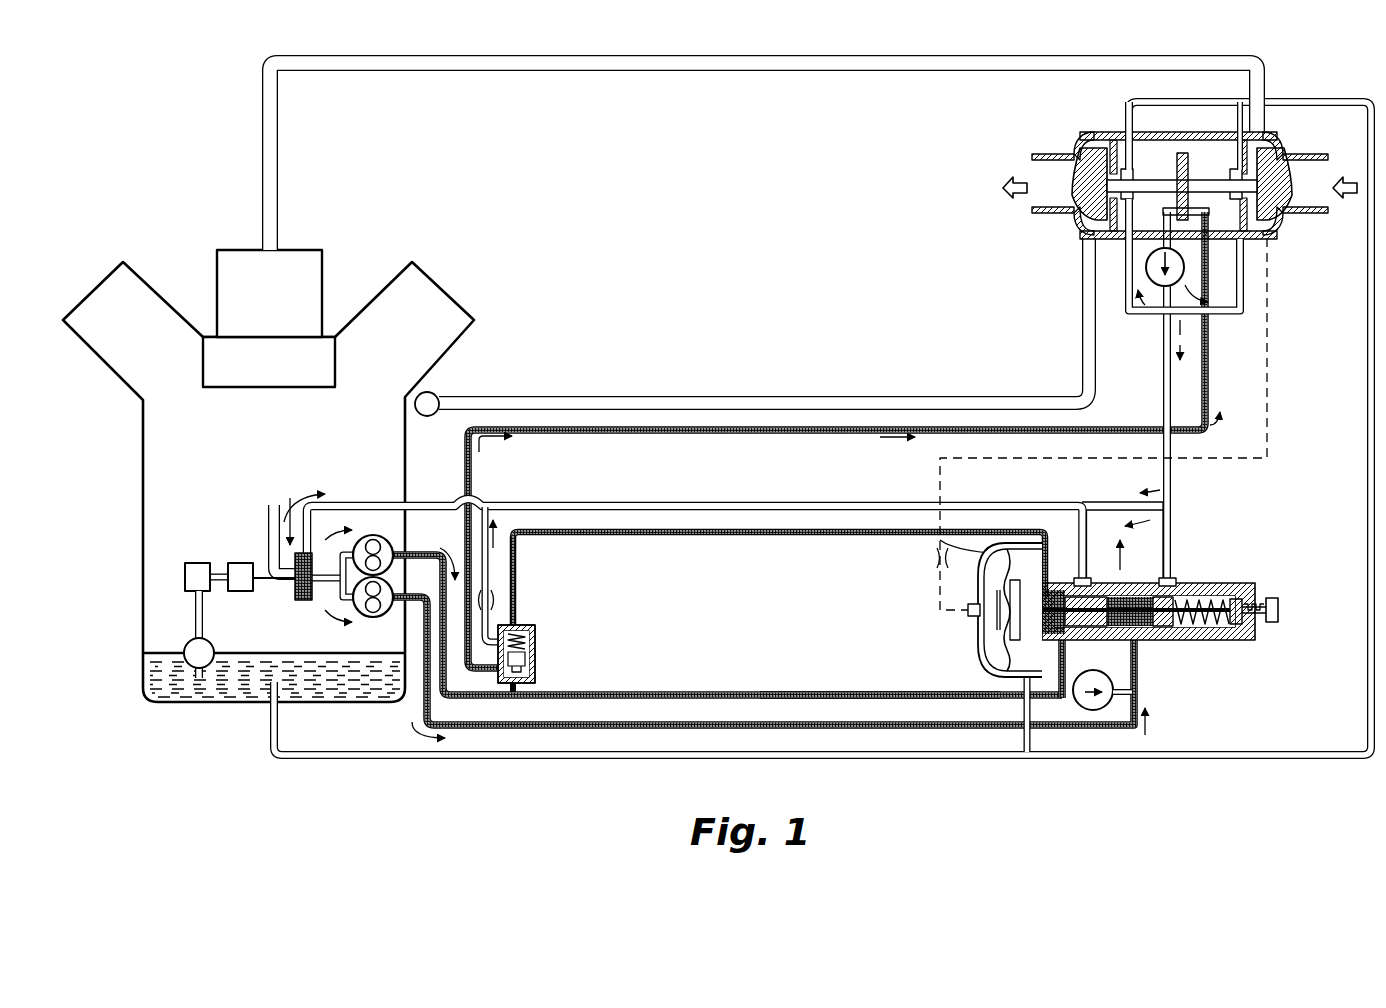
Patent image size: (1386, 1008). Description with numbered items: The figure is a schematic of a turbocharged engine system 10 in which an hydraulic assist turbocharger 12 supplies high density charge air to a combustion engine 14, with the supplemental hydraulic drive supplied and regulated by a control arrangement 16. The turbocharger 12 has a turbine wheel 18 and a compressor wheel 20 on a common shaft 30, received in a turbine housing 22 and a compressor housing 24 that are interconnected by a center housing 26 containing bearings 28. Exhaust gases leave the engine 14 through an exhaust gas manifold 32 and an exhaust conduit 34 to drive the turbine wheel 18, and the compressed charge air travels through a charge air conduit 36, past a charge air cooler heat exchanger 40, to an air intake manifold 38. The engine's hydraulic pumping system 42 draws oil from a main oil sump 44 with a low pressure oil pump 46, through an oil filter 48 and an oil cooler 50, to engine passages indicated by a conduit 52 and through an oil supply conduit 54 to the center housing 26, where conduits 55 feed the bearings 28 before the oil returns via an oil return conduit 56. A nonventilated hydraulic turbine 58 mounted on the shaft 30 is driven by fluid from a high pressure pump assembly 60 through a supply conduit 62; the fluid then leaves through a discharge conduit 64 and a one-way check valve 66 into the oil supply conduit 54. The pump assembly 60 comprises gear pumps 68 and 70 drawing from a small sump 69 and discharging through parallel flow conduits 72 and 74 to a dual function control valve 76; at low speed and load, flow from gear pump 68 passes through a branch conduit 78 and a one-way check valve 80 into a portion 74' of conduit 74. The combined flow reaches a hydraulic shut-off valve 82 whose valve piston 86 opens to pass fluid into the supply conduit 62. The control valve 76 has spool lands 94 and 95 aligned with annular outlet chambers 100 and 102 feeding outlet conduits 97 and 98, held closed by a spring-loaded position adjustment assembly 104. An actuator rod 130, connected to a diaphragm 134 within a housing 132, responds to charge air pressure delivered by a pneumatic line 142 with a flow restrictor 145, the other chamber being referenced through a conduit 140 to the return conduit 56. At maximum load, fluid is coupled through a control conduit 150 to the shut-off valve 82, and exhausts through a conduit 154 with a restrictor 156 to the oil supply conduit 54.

The turbocharged engine system 10 is at (132, 158).
The hydraulic assist turbocharger 12 is at (1010, 157).
The combustion engine 14 is at (143, 460).
The control arrangement 16 is at (985, 782).
The turbine wheel 18 is at (1078, 213).
The compressor wheel 20 is at (1285, 215).
The turbine housing 22 is at (1052, 157).
The compressor housing 24 is at (1290, 157).
The center housing 26 is at (1130, 118).
The bearings 28 is at (1135, 172).
The shaft 30 is at (1195, 180).
The exhaust gas manifold 32 is at (435, 398).
The exhaust conduit 34 is at (940, 395).
The charge air conduit 36 is at (797, 75).
The air intake manifold 38 is at (322, 345).
The charge air cooler heat exchanger 40 is at (301, 255).
The hydraulic pumping system 42 is at (175, 608).
The main oil sump 44 is at (250, 690).
The engine-driven oil pump 46 is at (215, 650).
The oil filter 48 is at (192, 562).
The oil cooler 50 is at (240, 562).
The conduit 52 is at (267, 512).
The oil supply conduit 54 is at (355, 503).
The conduits 55 is at (1245, 290).
The oil return conduit 56 is at (1310, 98).
The nonventilated hydraulic turbine 58 is at (1181, 150).
The high pressure pump assembly 60 is at (372, 622).
The supply conduit 62 is at (596, 438).
The discharge conduit 64 is at (1145, 243).
The one-way check valve 66 is at (1147, 272).
The gear pump 68 is at (363, 613).
The sump 69 is at (304, 603).
The gear pump 70 is at (372, 535).
The flow conduit 72 is at (604, 729).
The flow conduit 74 is at (727, 636).
The portion of flow conduit 74' is at (880, 675).
The dual function control valve 76 is at (1232, 550).
The branch conduit 78 is at (1122, 698).
The one-way check valve 80 is at (1093, 712).
The hydraulic shut-off valve 82 is at (542, 668).
The valve piston 86 is at (538, 647).
The spool land 94 is at (1172, 642).
The spool land 95 is at (1110, 642).
The outlet conduit 97 is at (1172, 525).
The outlet conduit 98 is at (1098, 509).
The annular outlet chamber 100 is at (1177, 583).
The annular outlet chamber 102 is at (1100, 583).
The spring-loaded position adjustment assembly 104 is at (1272, 630).
The actuator rod 130 is at (1047, 588).
The housing 132 is at (978, 640).
The diaphragm 134 is at (1000, 652).
The conduit 140 is at (1020, 705).
The pneumatic line 142 is at (1268, 400).
The flow restrictor 145 is at (932, 558).
The control conduit 150 is at (712, 537).
The conduit 154 is at (518, 555).
The restrictor 156 is at (518, 594).